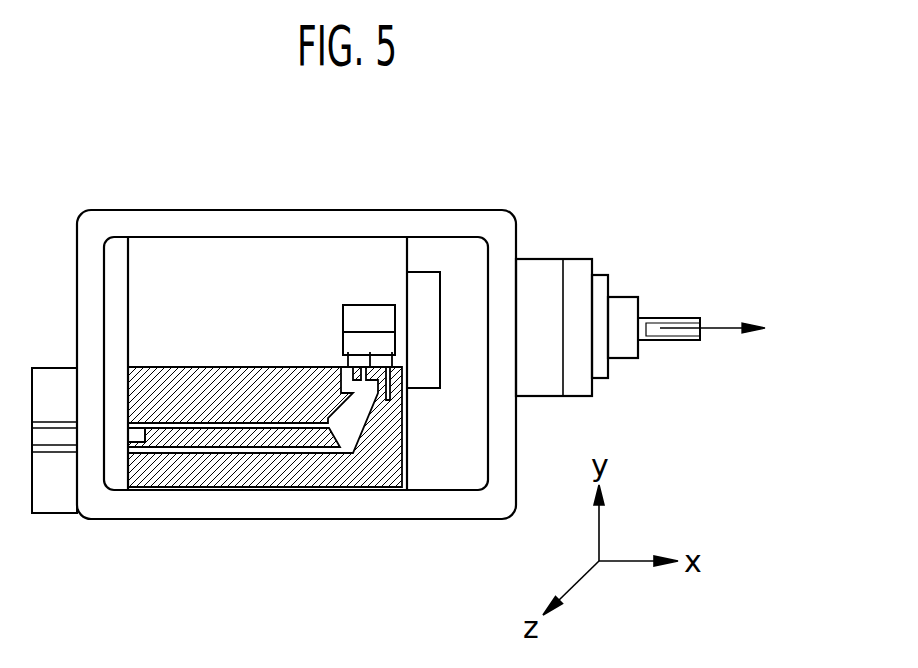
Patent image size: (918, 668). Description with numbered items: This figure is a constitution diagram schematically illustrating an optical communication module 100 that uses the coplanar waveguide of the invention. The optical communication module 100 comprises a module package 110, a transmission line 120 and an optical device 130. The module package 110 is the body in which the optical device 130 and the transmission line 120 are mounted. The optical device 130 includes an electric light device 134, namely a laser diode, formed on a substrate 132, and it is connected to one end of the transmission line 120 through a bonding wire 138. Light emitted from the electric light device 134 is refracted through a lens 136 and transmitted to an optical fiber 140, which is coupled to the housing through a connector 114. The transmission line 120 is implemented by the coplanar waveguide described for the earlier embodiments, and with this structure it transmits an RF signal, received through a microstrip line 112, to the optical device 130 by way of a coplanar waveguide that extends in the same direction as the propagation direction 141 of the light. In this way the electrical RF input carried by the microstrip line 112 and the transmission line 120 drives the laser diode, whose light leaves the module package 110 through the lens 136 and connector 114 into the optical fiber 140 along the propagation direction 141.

The optical communication module 100 is at (132, 112).
The module package 110 is at (205, 508).
The microstrip line 112 is at (135, 447).
The connector 114 is at (623, 360).
The transmission line 120 is at (342, 480).
The optical device 130 is at (345, 262).
The substrate 132 is at (380, 318).
The electric light device 134 is at (350, 339).
The lens 136 is at (425, 272).
The bonding wire 138 is at (347, 362).
The optical fiber 140 is at (668, 340).
The propagation direction 141 is at (715, 322).